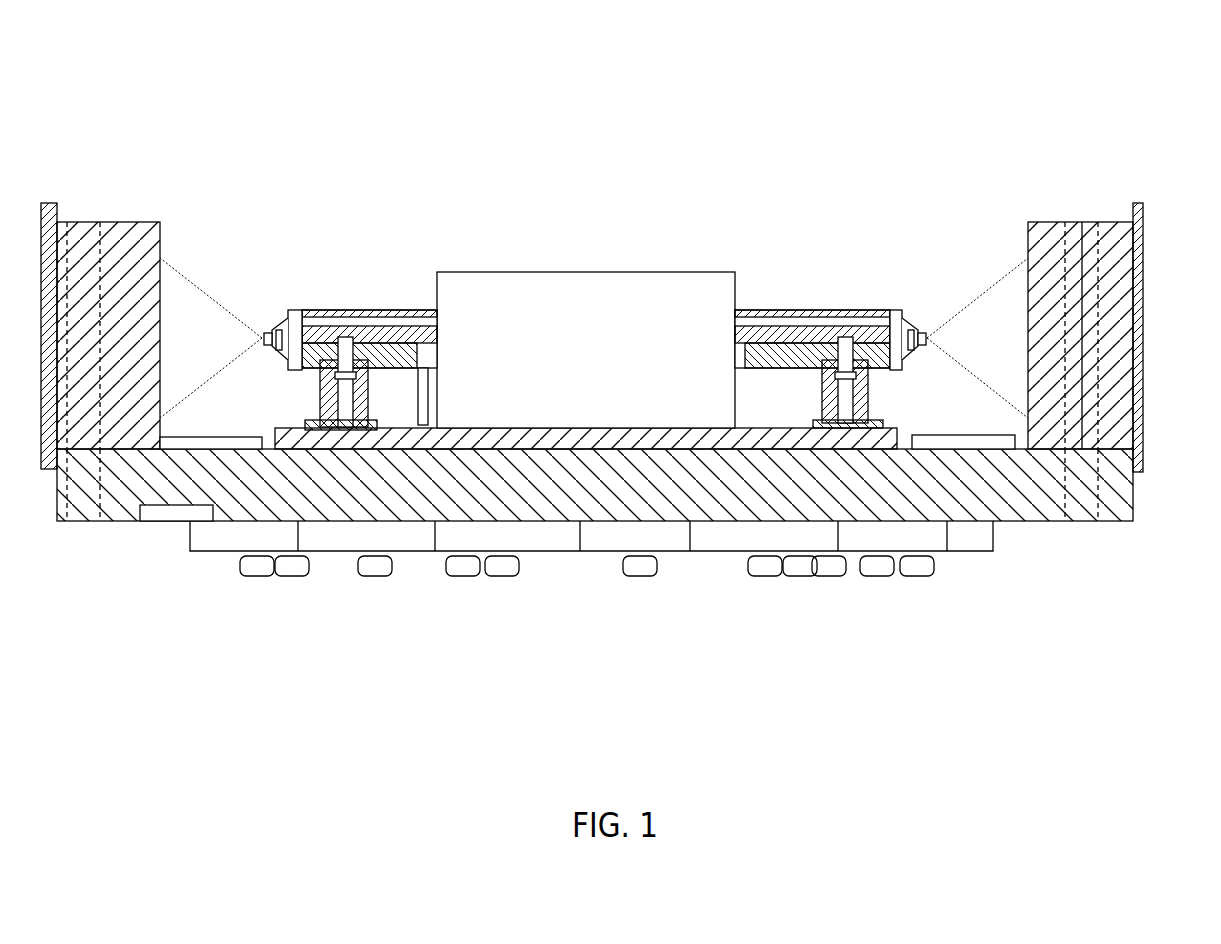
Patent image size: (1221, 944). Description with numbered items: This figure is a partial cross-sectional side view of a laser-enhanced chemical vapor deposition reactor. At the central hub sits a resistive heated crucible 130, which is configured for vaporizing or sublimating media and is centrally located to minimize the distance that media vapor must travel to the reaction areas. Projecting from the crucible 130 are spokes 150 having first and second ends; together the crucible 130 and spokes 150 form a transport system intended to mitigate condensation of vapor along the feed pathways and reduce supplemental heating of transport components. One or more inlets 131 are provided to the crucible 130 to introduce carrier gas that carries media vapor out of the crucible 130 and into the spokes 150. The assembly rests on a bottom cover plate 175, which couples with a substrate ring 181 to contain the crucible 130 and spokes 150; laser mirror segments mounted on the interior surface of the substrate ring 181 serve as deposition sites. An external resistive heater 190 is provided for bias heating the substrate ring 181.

The resistive heated crucible 130 is at (688, 272).
The inlet 131 is at (428, 365).
The spokes 150 is at (355, 308).
The bottom cover plate 175 is at (132, 522).
The substrate ring 181 is at (1070, 222).
The external resistive heater 190 is at (49, 203).